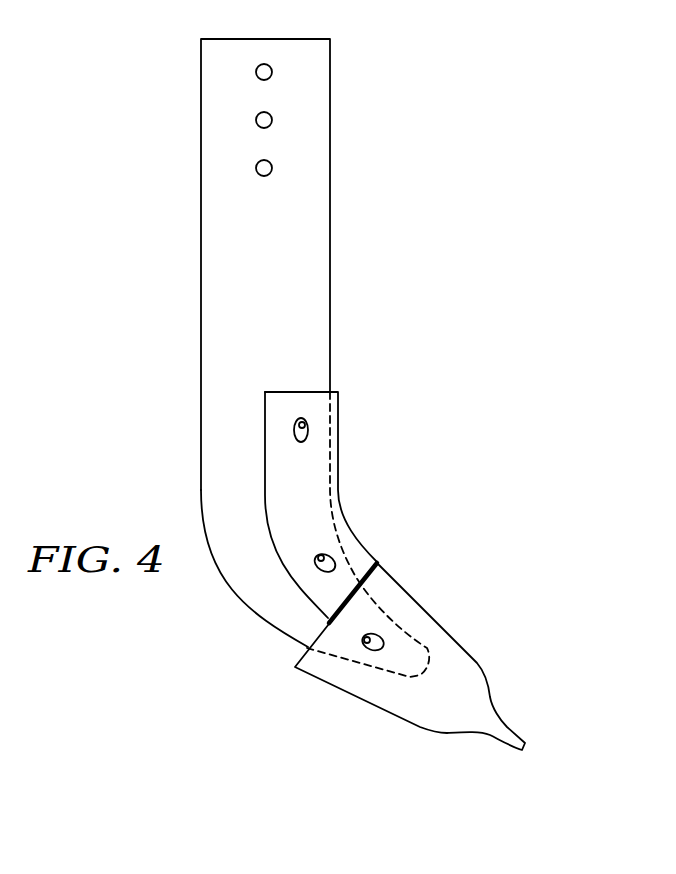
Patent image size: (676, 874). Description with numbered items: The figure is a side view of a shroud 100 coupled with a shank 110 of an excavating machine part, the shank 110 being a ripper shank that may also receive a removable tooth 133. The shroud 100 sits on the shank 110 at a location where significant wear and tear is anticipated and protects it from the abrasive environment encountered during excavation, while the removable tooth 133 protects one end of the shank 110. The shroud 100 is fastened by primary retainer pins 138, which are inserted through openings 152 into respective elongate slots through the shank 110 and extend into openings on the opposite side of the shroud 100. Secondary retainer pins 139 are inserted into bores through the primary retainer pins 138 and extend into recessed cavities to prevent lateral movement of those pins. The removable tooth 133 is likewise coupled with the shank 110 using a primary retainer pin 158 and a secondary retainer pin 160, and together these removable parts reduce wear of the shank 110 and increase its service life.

The shroud 100 is at (318, 482).
The shank 110 is at (201, 253).
The removable tooth 133 is at (430, 614).
The primary retainer pins 138 is at (308, 432).
The secondary retainer pins 139 is at (301, 420).
The openings 152 is at (300, 442).
The primary retainer pin 158 is at (382, 648).
The secondary retainer pin 160 is at (365, 644).